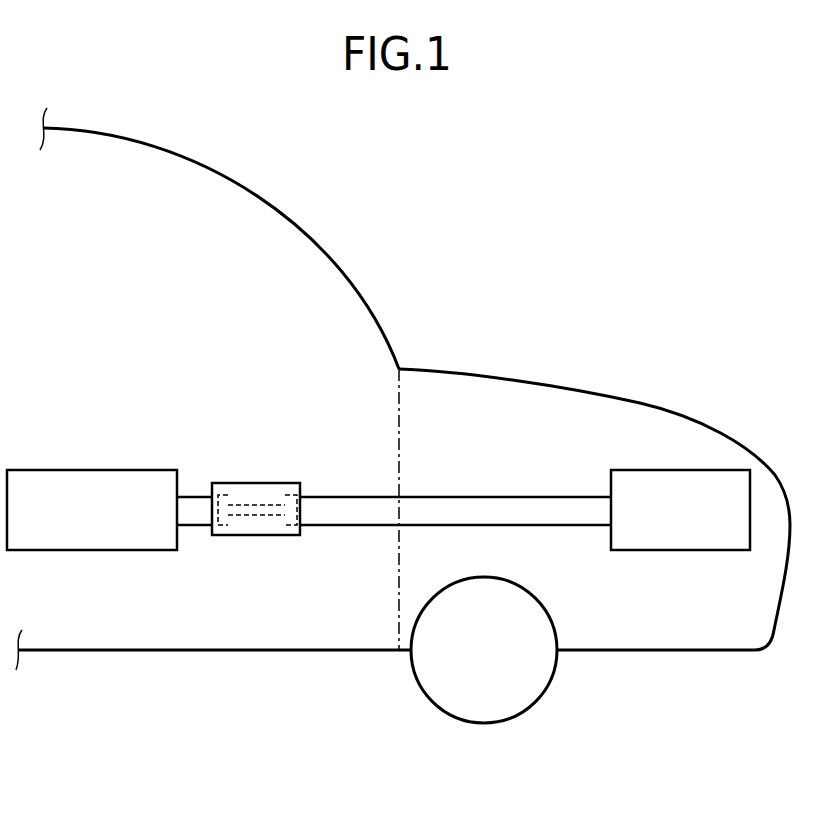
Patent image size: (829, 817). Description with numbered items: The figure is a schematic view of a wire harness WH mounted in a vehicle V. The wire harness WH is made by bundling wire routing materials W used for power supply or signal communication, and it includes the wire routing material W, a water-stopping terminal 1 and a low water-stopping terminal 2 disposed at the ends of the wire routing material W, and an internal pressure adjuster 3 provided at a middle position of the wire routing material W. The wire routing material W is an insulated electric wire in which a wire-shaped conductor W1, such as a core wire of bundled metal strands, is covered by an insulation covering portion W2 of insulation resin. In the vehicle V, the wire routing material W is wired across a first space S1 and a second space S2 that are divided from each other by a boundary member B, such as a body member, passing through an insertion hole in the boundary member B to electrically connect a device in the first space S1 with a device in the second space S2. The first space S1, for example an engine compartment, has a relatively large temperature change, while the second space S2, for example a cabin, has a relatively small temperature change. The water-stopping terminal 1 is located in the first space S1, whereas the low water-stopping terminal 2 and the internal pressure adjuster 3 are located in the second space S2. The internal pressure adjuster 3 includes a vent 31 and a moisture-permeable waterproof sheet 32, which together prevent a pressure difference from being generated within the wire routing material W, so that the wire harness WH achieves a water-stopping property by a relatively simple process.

The water-stopping terminal 1 is at (677, 470).
The low water-stopping terminal 2 is at (103, 470).
The internal pressure adjuster 3 is at (264, 566).
The vent 31 is at (257, 548).
The moisture-permeable waterproof sheet 32 is at (280, 538).
The wire routing material W is at (419, 429).
The conductor W1 is at (256, 449).
The insulation covering portion W2 is at (335, 495).
The wire harness WH is at (170, 352).
The vehicle V is at (403, 415).
The boundary member B is at (399, 430).
The first space S1 is at (597, 430).
The second space S2 is at (305, 277).